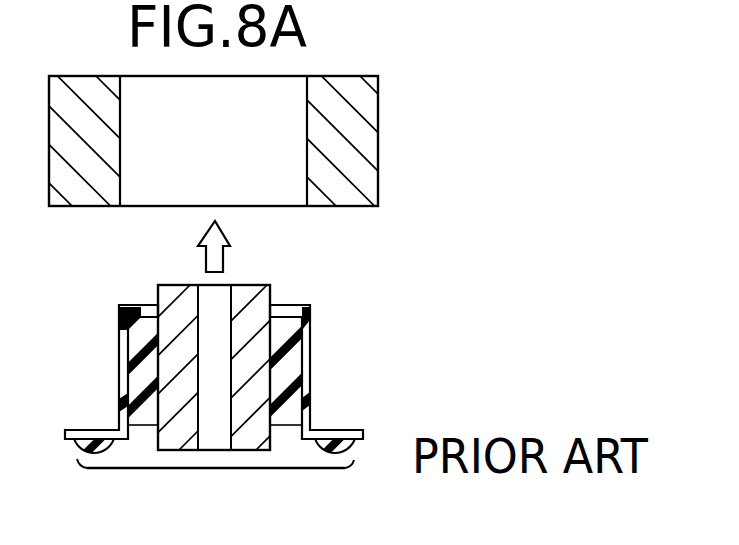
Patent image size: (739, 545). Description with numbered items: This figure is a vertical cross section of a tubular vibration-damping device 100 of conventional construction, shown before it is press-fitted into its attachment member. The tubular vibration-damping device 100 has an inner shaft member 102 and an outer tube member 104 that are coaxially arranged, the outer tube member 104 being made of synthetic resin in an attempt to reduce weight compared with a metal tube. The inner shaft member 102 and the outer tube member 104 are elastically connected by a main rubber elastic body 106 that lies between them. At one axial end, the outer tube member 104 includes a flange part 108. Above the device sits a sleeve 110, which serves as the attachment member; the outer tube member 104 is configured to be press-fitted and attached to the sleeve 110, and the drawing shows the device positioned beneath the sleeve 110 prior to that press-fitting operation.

The tubular vibration-damping device 100 is at (298, 283).
The inner shaft member 102 is at (175, 282).
The outer tube member 104 is at (312, 350).
The main rubber elastic body 106 is at (142, 348).
The flange part 108 is at (333, 433).
The sleeve 110 is at (362, 176).